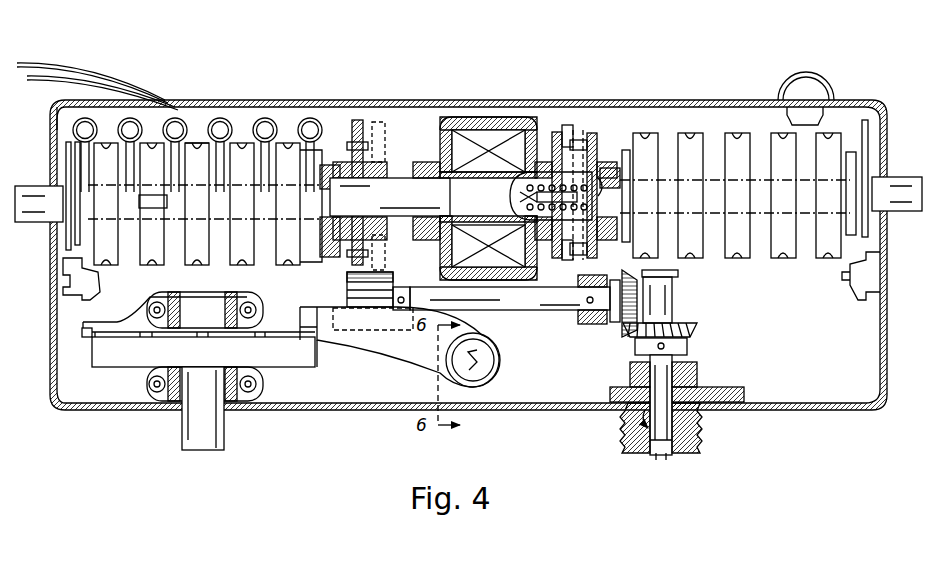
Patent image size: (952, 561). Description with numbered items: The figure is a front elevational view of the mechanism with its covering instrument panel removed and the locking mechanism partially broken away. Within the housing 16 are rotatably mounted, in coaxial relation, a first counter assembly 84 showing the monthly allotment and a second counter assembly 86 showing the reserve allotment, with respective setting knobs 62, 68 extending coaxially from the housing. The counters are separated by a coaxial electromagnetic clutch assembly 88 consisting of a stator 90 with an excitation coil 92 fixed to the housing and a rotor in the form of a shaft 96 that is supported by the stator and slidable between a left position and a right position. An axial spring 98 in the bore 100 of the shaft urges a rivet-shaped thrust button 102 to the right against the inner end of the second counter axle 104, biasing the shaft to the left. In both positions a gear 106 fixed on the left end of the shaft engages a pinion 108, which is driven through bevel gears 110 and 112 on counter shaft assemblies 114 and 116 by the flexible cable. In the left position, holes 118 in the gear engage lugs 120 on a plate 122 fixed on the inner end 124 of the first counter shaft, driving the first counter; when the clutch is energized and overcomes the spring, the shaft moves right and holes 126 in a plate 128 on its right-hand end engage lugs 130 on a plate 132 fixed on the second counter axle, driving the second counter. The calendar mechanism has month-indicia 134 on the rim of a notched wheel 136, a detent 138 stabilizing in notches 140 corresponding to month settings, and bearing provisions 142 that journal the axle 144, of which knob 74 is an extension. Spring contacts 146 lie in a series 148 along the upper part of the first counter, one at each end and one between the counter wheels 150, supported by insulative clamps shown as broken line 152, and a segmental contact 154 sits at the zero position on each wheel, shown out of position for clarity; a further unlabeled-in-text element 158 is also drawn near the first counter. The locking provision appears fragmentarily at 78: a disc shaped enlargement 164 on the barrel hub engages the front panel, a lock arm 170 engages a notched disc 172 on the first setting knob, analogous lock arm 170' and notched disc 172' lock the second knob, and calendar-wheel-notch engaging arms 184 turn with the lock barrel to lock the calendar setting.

The housing 16 is at (285, 101).
The setting knob 62 is at (32, 192).
The setting knob 68 is at (902, 187).
The knob 74 is at (200, 442).
The locking provision 78 is at (506, 372).
The first counter assembly 84 is at (245, 122).
The second counter assembly 86 is at (757, 128).
The electromagnetic clutch assembly 88 is at (483, 113).
The stator 90 is at (458, 120).
The excitation coil 92 is at (498, 133).
The shaft 96 is at (442, 180).
The axial spring 98 is at (512, 192).
The bore 100 is at (622, 172).
The thrust button 102 is at (597, 185).
The second counter axle 104 is at (605, 193).
The gear 106 is at (354, 130).
The pinion 108 is at (388, 277).
The bevel gear 110 is at (620, 328).
The bevel gear 112 is at (688, 330).
The counter shaft assembly 114 is at (525, 308).
The counter shaft assembly 116 is at (663, 380).
The holes 118 is at (350, 142).
The lugs 120 is at (366, 140).
The plate 122 is at (352, 182).
The inner end 124 is at (333, 200).
The holes 126 is at (575, 127).
The plate 128 is at (553, 127).
The lugs 130 is at (590, 125).
The plate 132 is at (600, 165).
The month-indicia 134 is at (268, 357).
The notched wheel 136 is at (115, 362).
The detent 138 is at (86, 336).
The notches 140 is at (147, 336).
The bearing provisions 142 is at (250, 392).
The axle 144 is at (207, 372).
The spring contacts 146 is at (181, 118).
The series 148 is at (62, 128).
The counter wheels 150 is at (199, 140).
The insulative clamps 152 is at (82, 120).
The segmental contact 154 is at (165, 206).
The end plate 158 is at (313, 264).
The disc shaped enlargement 164 is at (490, 380).
The lock arm 170 is at (54, 285).
The lock arm 170' is at (851, 290).
The notched disc 172 is at (44, 201).
The notched disc 172' is at (895, 181).
The calendar-wheel-notch engaging arms 184 is at (420, 345).